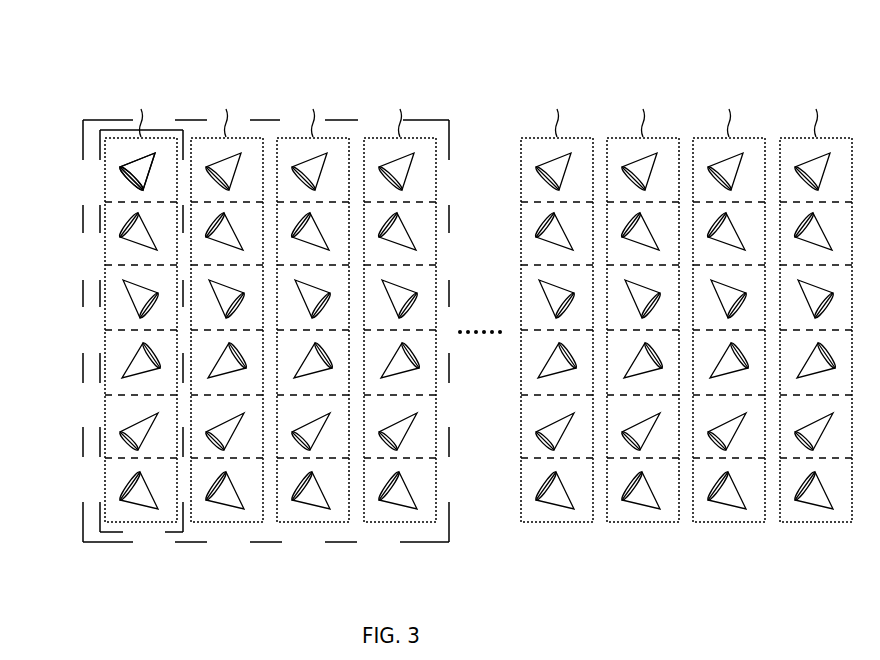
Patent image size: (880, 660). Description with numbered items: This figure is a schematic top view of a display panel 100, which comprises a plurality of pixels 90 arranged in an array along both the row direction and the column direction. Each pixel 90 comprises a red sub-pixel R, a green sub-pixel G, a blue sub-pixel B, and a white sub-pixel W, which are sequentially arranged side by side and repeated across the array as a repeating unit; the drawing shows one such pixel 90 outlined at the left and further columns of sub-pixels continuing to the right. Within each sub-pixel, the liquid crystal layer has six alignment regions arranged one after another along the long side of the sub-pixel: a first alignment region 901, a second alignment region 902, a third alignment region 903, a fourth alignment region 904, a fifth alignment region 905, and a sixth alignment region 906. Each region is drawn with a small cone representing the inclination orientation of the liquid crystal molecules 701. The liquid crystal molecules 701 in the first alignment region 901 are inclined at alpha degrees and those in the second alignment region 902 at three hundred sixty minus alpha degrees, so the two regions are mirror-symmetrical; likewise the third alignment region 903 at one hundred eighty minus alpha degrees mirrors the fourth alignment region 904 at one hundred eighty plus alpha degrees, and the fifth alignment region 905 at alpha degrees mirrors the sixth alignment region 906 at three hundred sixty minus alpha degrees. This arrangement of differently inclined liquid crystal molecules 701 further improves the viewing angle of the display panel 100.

The display panel 100 is at (163, 49).
The pixel 90 is at (227, 361).
The liquid crystal molecule 701 is at (157, 155).
The first alignment region 901 is at (120, 190).
The second alignment region 902 is at (120, 234).
The third alignment region 903 is at (120, 313).
The fourth alignment region 904 is at (120, 361).
The fifth alignment region 905 is at (120, 433).
The sixth alignment region 906 is at (120, 506).